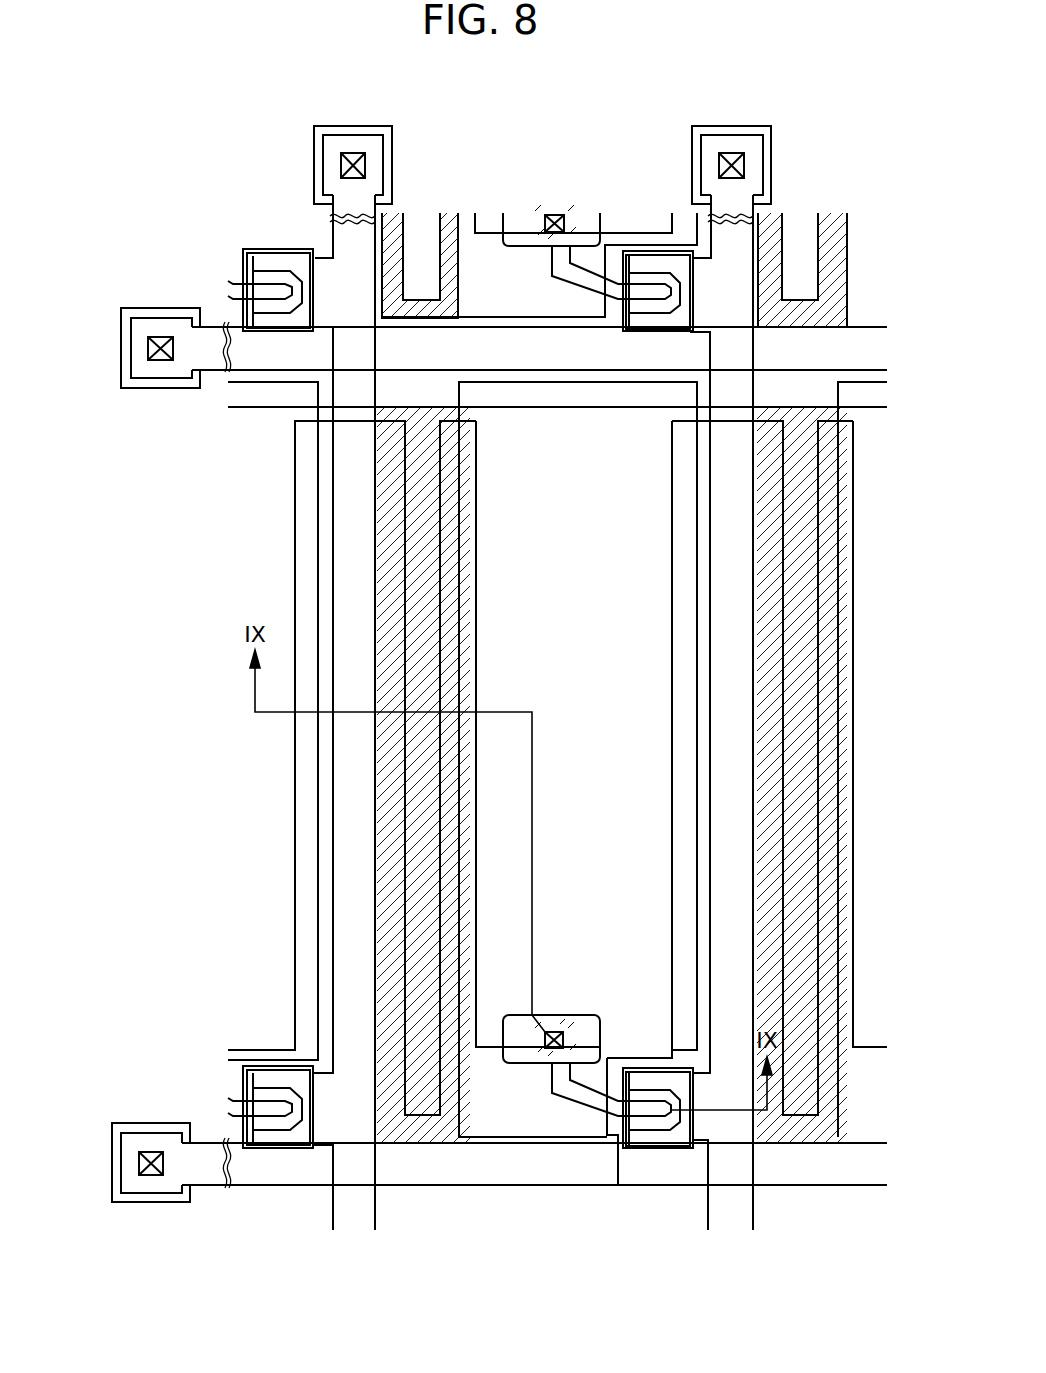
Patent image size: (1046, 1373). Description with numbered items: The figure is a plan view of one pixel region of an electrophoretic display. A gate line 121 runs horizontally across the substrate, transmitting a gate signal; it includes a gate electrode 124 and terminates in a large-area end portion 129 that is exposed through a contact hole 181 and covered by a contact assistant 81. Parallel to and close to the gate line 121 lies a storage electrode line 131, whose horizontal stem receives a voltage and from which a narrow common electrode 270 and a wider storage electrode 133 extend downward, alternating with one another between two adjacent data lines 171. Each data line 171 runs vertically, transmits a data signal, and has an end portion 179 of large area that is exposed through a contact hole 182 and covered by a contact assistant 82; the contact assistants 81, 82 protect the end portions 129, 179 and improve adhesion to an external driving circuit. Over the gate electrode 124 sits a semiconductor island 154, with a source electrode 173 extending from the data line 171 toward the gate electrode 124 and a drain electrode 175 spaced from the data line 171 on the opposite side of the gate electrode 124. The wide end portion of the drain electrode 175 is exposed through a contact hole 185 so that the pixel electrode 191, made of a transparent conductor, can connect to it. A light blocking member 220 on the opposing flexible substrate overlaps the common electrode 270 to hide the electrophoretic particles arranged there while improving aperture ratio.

The contact assistant 81 is at (121, 362).
The contact assistant 82 is at (394, 160).
The gate line 121 is at (498, 327).
The gate electrode 124 is at (656, 1062).
The end portion of gate line 129 is at (170, 318).
The storage electrode line 131 is at (873, 405).
The storage electrode 133 is at (476, 765).
The semiconductor island 154 is at (657, 1150).
The data line 171 is at (333, 545).
The source electrode 173 is at (634, 1090).
The drain electrode 175 is at (585, 1115).
The end portion of data line 179 is at (318, 157).
The contact hole 181 is at (152, 337).
The contact hole 182 is at (353, 153).
The contact hole 185 is at (553, 1031).
The pixel electrode 191 is at (245, 378).
The light blocking member 220 is at (390, 850).
The common electrode 270 is at (390, 580).